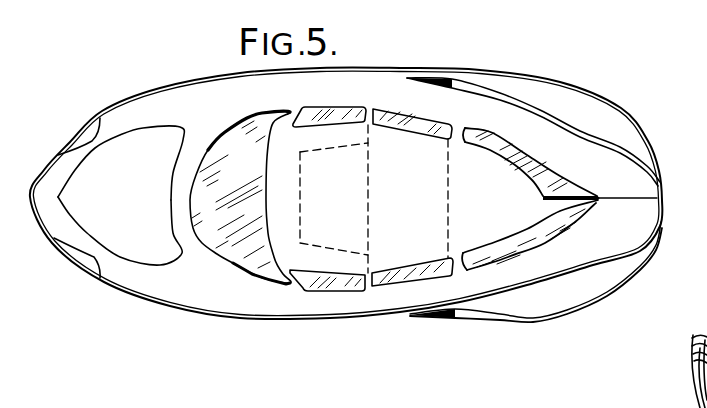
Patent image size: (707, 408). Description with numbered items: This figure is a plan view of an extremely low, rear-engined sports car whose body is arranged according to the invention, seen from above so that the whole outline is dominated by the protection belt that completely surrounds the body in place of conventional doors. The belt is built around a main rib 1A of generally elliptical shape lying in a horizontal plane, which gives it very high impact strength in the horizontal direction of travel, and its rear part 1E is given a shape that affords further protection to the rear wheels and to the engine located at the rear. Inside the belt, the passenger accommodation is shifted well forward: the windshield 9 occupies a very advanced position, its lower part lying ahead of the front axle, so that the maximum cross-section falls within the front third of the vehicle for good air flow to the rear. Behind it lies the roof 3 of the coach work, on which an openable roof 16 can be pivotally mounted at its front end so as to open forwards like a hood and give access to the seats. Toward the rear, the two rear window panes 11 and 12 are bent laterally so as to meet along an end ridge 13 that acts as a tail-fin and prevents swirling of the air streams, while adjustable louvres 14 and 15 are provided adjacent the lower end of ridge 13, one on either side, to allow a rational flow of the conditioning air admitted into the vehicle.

The main rib 1A is at (302, 320).
The rear part of the protection belt 1E is at (568, 315).
The roof 3 is at (392, 102).
The windshield 9 is at (252, 224).
The rear window pane 11 is at (550, 220).
The rear window pane 12 is at (530, 153).
The end ridge 13 is at (558, 195).
The adjustable louvre 14 is at (597, 193).
The adjustable louvre 15 is at (598, 201).
The openable roof 16 is at (340, 160).